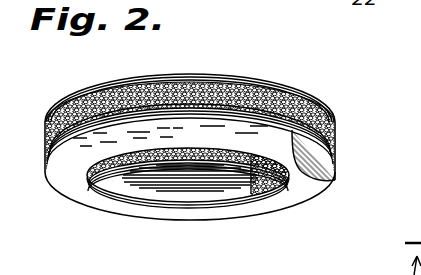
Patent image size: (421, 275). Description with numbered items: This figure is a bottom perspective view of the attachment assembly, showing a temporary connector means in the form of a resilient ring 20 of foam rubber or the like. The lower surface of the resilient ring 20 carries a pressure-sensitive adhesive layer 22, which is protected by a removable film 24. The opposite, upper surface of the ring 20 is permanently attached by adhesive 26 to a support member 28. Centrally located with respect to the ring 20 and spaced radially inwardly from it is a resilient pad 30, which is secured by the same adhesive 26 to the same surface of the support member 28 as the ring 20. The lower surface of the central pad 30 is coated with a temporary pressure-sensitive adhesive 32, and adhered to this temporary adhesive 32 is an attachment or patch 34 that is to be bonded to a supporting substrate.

The resilient ring 20 is at (337, 136).
The pressure-sensitive adhesive layer 22 is at (336, 181).
The removable film 24 is at (283, 193).
The adhesive 26 is at (292, 102).
The support member 28 is at (212, 73).
The resilient pad 30 is at (140, 153).
The temporary pressure-sensitive adhesive 32 is at (221, 163).
The attachment or patch 34 is at (160, 183).